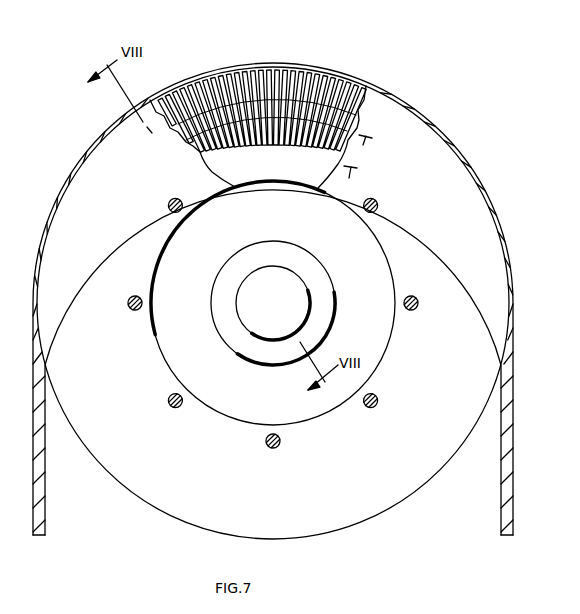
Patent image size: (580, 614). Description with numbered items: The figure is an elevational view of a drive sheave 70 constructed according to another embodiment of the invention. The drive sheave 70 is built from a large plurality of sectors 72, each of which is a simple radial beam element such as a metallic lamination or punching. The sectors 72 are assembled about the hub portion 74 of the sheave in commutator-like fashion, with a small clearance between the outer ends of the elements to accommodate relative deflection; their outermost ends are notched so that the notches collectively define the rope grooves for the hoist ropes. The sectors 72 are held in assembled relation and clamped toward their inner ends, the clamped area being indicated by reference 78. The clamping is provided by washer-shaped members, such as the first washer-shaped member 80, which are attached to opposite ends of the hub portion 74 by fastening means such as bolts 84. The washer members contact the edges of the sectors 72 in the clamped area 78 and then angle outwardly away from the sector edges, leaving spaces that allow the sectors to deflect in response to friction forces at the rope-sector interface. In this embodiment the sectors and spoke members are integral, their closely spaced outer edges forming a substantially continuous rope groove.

The drive sheave 70 is at (382, 507).
The sectors 72 is at (300, 72).
The hub portion 74 is at (259, 178).
The clamped area 78 is at (365, 160).
The first washer-shaped member 80 is at (492, 273).
The bolts 84 is at (169, 214).